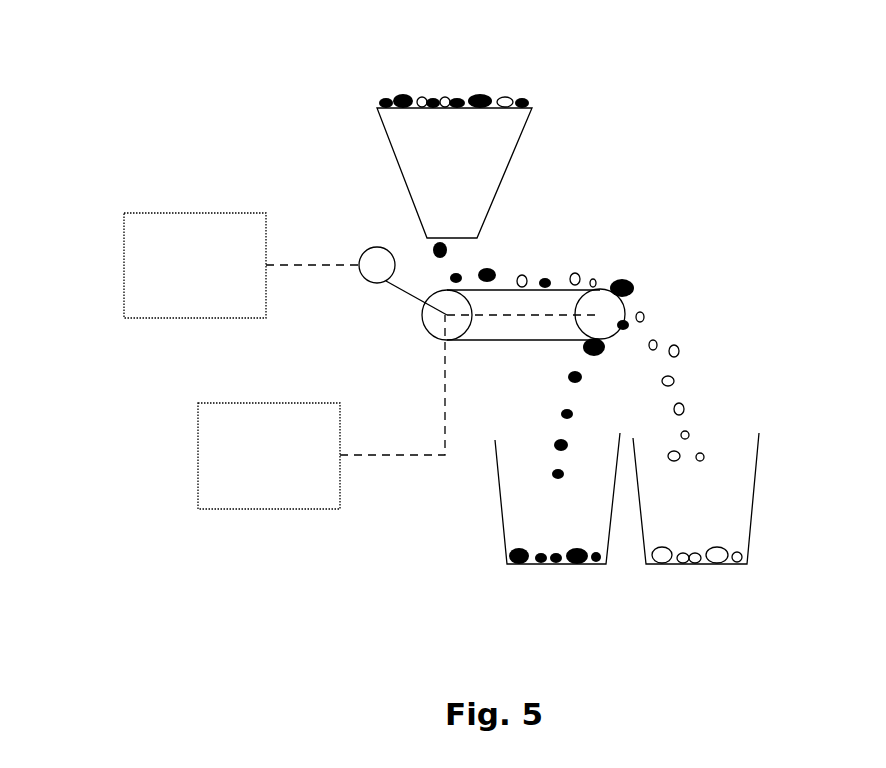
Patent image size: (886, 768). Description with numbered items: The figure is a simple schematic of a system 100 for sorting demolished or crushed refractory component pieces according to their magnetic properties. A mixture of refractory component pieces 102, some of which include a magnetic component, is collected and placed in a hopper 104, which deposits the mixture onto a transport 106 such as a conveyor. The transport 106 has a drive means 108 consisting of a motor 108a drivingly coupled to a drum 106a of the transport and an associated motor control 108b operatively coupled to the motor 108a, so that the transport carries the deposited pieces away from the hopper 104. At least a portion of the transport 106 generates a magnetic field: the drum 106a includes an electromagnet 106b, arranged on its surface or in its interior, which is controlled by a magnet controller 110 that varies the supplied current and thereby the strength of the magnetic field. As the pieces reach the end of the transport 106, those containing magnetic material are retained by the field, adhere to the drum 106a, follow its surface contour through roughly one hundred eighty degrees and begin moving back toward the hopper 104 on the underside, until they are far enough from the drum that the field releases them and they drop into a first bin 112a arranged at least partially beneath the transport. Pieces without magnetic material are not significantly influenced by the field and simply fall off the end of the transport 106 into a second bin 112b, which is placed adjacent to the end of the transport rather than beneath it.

The system 100 is at (655, 137).
The mixture of refractory component pieces 102 is at (424, 68).
The hopper 104 is at (398, 162).
The transport 106 is at (491, 309).
The drum 106a is at (604, 289).
The electromagnet 106b is at (560, 327).
The drive means 108 is at (236, 216).
The motor 108a is at (362, 252).
The motor control 108b is at (124, 268).
The magnet controller 110 is at (268, 403).
The first bin 112a is at (502, 528).
The second bin 112b is at (753, 525).